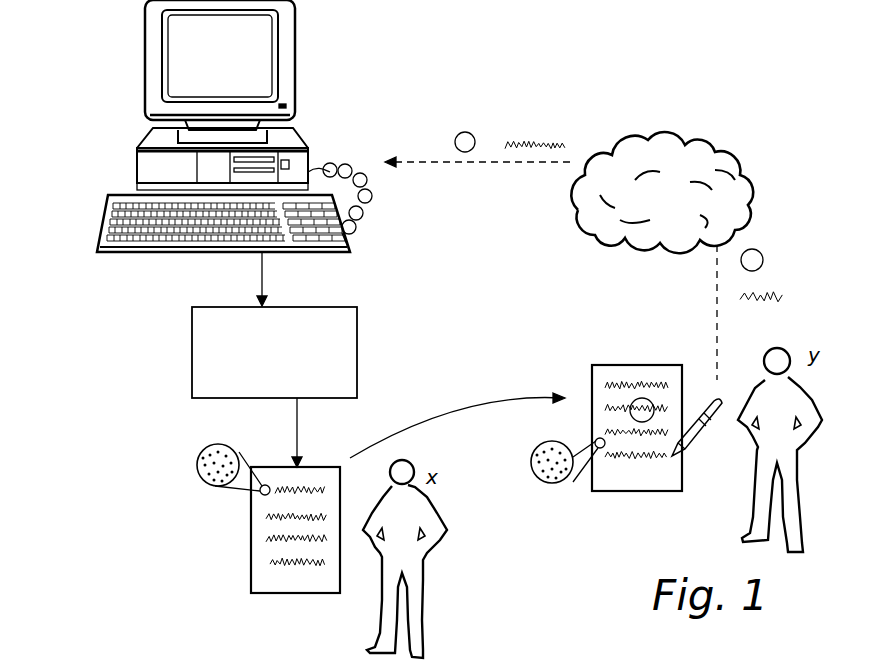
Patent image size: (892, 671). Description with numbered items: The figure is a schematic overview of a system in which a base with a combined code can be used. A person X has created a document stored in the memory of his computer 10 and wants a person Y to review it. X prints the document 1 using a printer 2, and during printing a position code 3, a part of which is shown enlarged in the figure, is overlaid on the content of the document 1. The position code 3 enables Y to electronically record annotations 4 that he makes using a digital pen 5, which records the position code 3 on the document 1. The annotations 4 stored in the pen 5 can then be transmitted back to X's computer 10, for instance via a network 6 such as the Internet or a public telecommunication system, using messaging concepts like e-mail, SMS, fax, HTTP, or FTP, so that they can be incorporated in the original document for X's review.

The document 1 is at (252, 533).
The printer 2 is at (200, 356).
The position code 3 is at (198, 468).
The annotations 4 is at (471, 132).
The digital pen 5 is at (701, 430).
The network 6 is at (732, 165).
The computer 10 is at (143, 93).